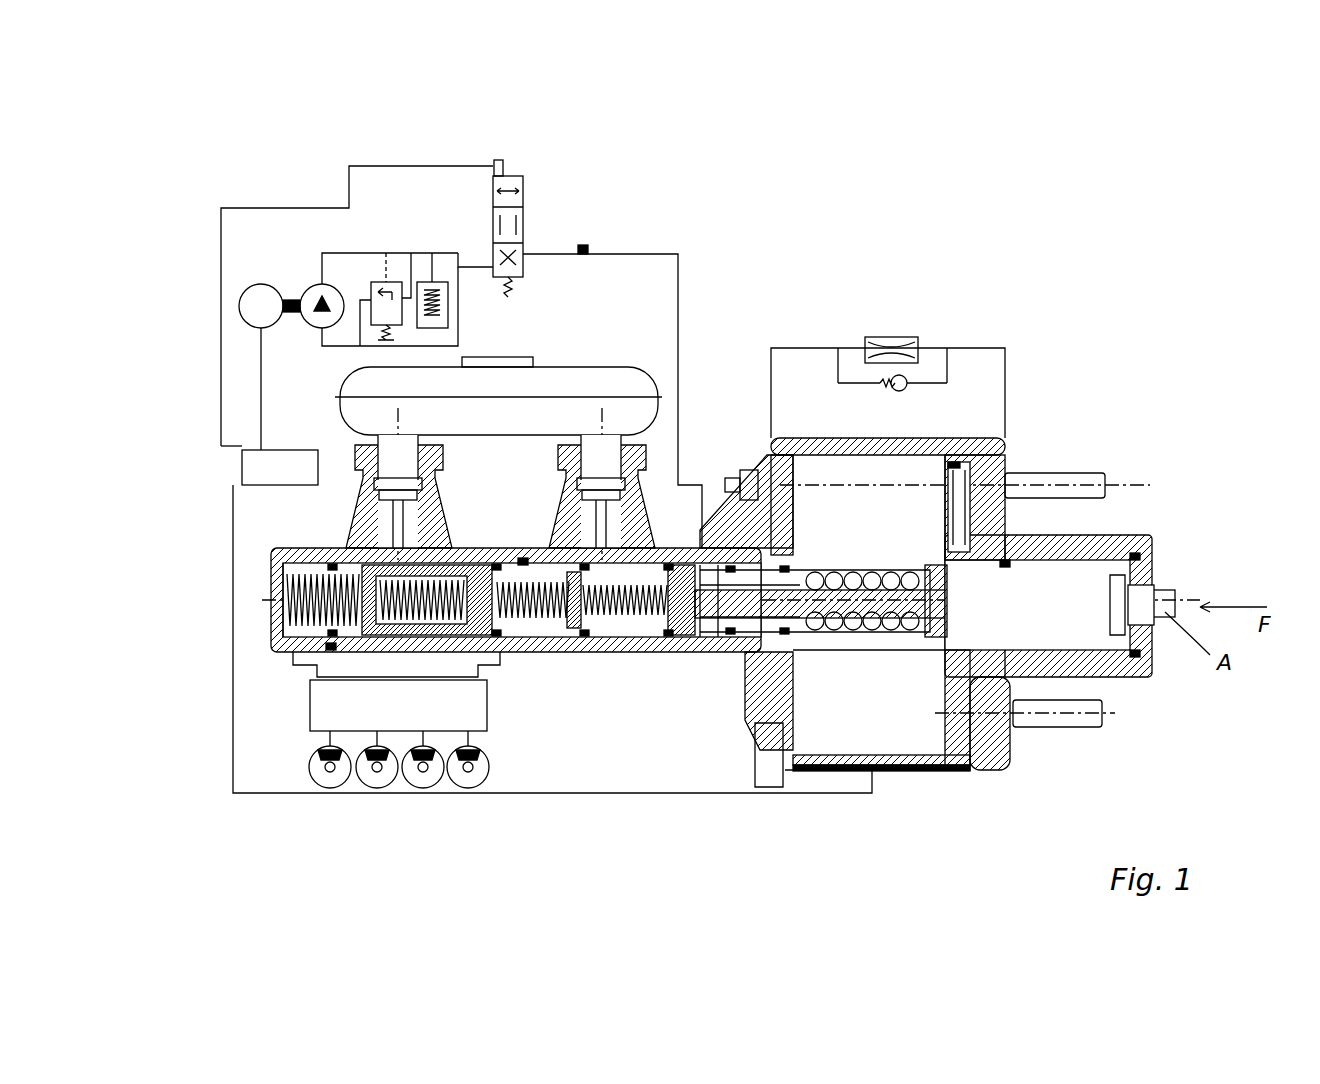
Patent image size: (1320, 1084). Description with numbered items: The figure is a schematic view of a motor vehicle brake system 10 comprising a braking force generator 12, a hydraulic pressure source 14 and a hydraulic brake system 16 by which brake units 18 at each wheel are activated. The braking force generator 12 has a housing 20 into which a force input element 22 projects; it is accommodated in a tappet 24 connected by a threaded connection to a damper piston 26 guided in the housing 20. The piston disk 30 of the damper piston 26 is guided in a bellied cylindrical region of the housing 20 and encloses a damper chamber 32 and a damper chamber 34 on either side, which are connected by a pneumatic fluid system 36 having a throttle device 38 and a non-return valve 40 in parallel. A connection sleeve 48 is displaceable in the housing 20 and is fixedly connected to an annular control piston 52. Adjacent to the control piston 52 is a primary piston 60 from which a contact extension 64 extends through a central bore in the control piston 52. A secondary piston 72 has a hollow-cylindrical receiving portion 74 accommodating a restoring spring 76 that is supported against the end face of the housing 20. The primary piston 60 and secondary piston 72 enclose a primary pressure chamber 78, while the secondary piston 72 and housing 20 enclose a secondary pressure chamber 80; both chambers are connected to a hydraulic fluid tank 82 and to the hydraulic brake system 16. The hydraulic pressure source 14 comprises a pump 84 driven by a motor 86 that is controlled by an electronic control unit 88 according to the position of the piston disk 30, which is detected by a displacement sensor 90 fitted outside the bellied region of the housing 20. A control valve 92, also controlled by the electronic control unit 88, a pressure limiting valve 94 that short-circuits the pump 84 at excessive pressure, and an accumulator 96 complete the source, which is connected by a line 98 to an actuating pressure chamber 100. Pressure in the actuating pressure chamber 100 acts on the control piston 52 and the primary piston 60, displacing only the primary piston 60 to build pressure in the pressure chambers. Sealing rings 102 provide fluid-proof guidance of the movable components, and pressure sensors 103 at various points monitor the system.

The motor vehicle brake system 10 is at (787, 185).
The braking force generator 12 is at (1045, 425).
The hydraulic pressure source 14 is at (481, 129).
The hydraulic brake system 16 is at (305, 718).
The brake units 18 is at (330, 790).
The housing 20 is at (1100, 487).
The force input element 22 is at (1170, 600).
The tappet 24 is at (1150, 540).
The damper piston 26 is at (1060, 670).
The piston disk 30 is at (953, 773).
The damper chamber 32 is at (750, 465).
The damper chamber 34 is at (1033, 532).
The pneumatic fluid system 36 is at (790, 348).
The throttle device 38 is at (900, 337).
The non-return valve 40 is at (960, 460).
The connection sleeve 48 is at (930, 770).
The control piston 52 is at (757, 783).
The primary piston 60 is at (660, 650).
The contact extension 64 is at (855, 655).
The secondary piston 72 is at (545, 640).
The receiving portion 74 is at (320, 660).
The restoring spring 76 is at (285, 600).
The primary pressure chamber 78 is at (575, 640).
The secondary pressure chamber 80 is at (300, 560).
The hydraulic fluid tank 82 is at (622, 368).
The pump 84 is at (314, 286).
The motor 86 is at (262, 284).
The electronic control unit 88 is at (233, 462).
The displacement sensor 90 is at (920, 772).
The control valve 92 is at (530, 190).
The pressure limiting valve 94 is at (380, 282).
The accumulator 96 is at (435, 282).
The line 98 is at (630, 254).
The actuating pressure chamber 100 is at (705, 650).
The sealing rings 102 is at (330, 565).
The pressure sensors 103 is at (583, 245).